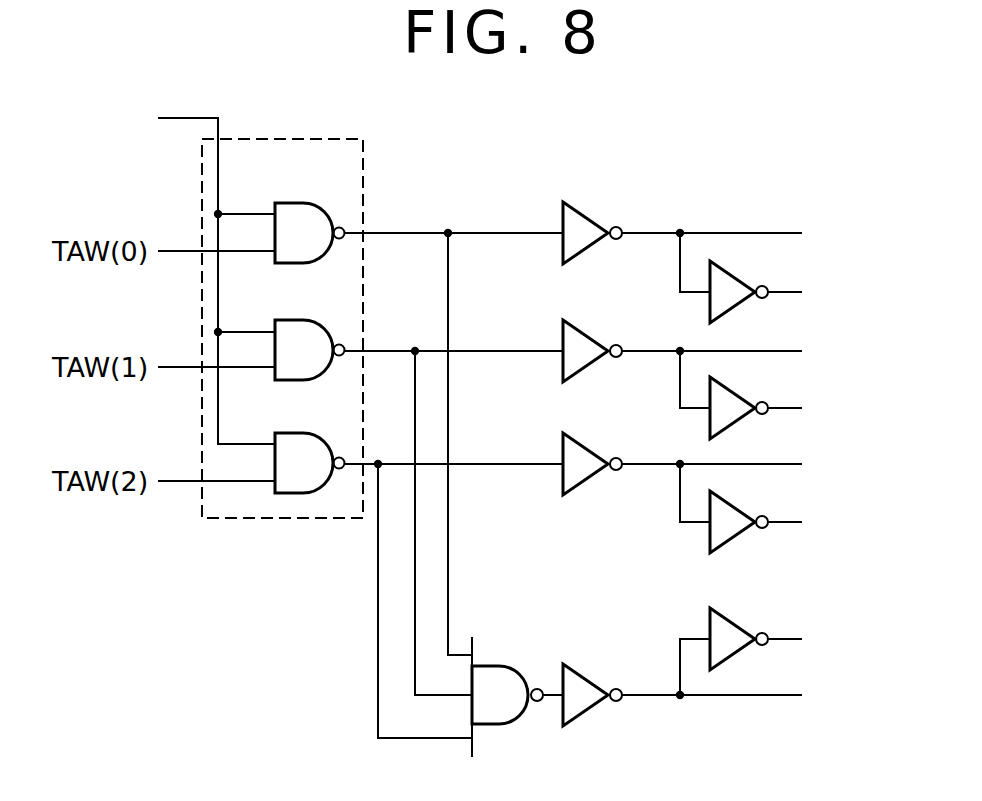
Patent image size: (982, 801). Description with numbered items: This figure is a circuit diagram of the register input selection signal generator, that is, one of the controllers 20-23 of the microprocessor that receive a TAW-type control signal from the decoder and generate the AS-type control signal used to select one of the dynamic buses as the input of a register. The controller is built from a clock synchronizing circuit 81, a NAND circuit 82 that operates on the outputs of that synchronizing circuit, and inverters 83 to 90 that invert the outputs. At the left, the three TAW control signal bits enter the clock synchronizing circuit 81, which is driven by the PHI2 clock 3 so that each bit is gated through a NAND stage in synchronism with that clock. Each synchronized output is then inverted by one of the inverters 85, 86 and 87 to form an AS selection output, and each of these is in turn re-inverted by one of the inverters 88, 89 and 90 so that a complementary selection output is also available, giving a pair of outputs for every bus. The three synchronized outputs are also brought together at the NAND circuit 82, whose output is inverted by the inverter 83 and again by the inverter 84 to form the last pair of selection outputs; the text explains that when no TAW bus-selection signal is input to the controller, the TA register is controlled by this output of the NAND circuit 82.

The PHI2 clock 3 is at (183, 115).
The clock synchronizing circuit 81 is at (275, 518).
The controllers 20-23 is at (737, 167).
The NAND circuit 82 is at (493, 667).
The inverter 83 is at (582, 672).
The inverter 84 is at (737, 628).
The inverter 85 is at (595, 253).
The inverter 86 is at (590, 370).
The inverter 87 is at (590, 487).
The inverter 88 is at (737, 310).
The inverter 89 is at (735, 423).
The inverter 90 is at (740, 537).